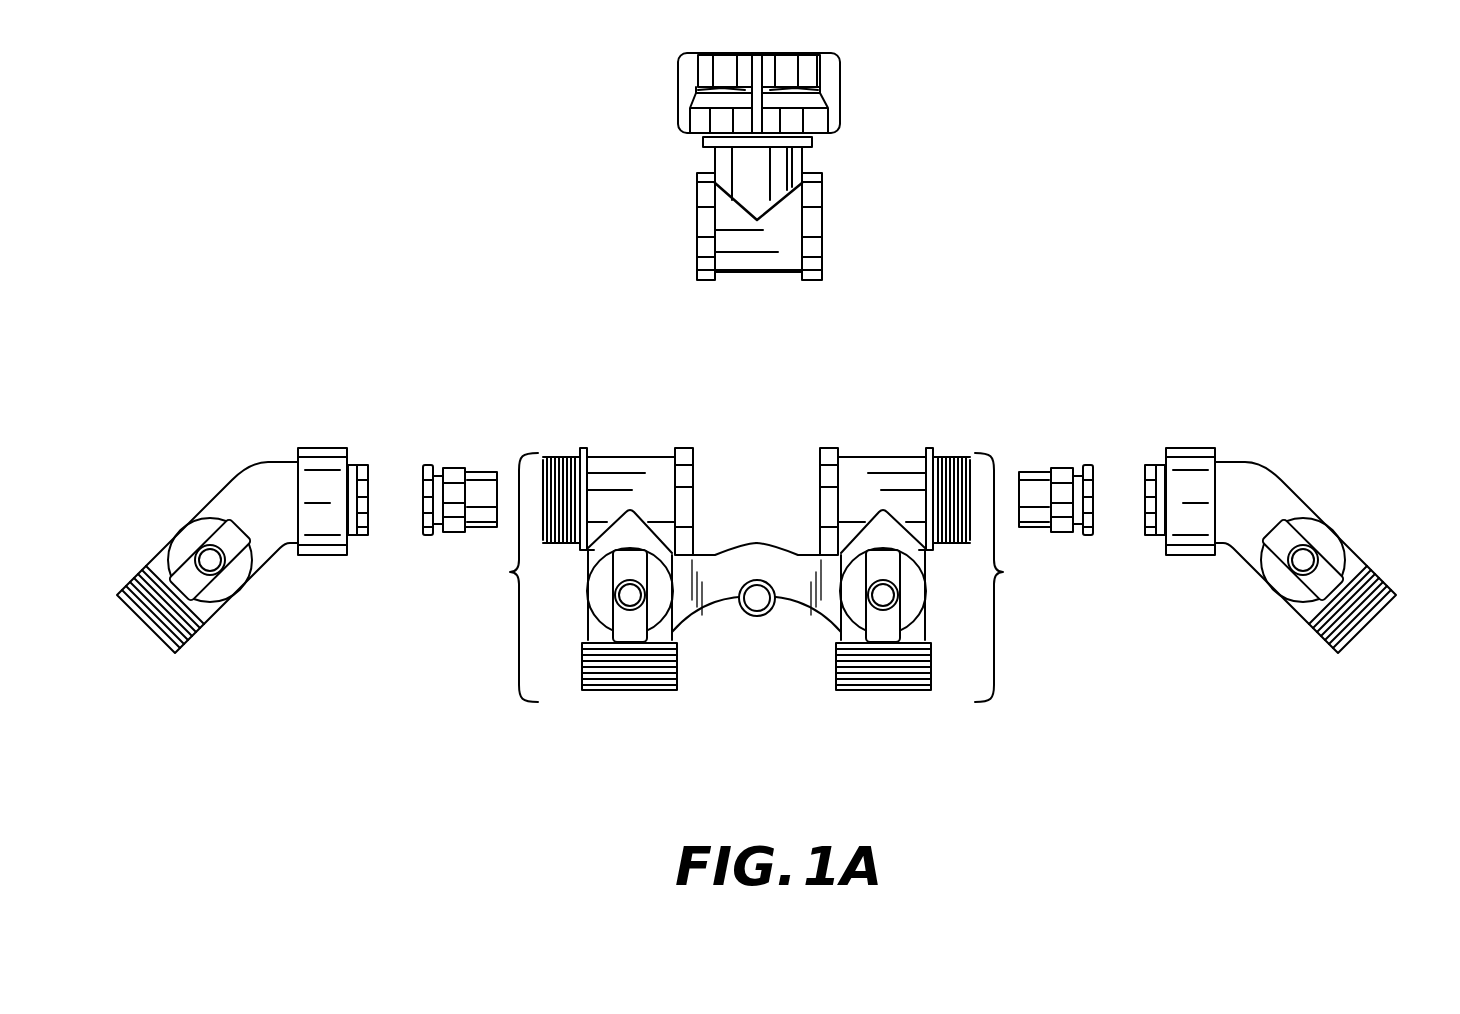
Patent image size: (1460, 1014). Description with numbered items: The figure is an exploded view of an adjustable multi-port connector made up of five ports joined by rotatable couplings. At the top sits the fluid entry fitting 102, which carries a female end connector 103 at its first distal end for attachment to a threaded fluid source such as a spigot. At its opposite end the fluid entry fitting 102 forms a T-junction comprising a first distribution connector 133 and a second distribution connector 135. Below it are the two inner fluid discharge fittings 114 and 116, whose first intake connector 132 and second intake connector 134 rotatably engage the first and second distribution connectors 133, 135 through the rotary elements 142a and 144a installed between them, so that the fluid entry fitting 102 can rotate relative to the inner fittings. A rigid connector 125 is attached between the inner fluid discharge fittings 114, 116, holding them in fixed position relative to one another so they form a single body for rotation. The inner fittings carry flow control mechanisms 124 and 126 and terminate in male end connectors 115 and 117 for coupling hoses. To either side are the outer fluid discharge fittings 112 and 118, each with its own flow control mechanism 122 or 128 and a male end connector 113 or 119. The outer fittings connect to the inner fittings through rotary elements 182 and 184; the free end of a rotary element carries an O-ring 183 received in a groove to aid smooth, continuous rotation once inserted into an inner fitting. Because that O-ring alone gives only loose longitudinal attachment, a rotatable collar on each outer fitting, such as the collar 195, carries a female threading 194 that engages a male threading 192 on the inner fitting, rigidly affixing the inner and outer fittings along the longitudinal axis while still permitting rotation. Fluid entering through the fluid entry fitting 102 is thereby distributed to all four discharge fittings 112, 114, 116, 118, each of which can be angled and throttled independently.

The fluid entry fitting 102 is at (801, 146).
The female end connector 103 is at (782, 52).
The first distribution connector 133 is at (696, 222).
The second distribution connector 135 is at (855, 226).
The outer fluid discharge fitting 112 is at (268, 543).
The male end connector 113 is at (167, 647).
The flow control mechanism 122 is at (208, 606).
The rotary element 182 is at (363, 465).
The O-ring 183 is at (350, 538).
The rotary element 142a is at (457, 466).
The male threading 192 is at (557, 455).
The first intake connector 132 is at (687, 448).
The second intake connector 134 is at (832, 448).
The female threading 194 is at (947, 455).
The inner fluid discharge fitting 114 is at (510, 572).
The inner fluid discharge fitting 116 is at (1003, 572).
The flow control mechanism 124 is at (660, 572).
The flow control mechanism 126 is at (914, 620).
The rigid connector 125 is at (758, 617).
The male end connector 115 is at (632, 690).
The male end connector 117 is at (900, 690).
The rotary element 144a is at (1035, 468).
The rotary element 184 is at (1149, 468).
The collar 195 is at (1195, 557).
The outer fluid discharge fitting 118 is at (1268, 551).
The flow control mechanism 128 is at (1297, 607).
The male end connector 119 is at (1358, 638).